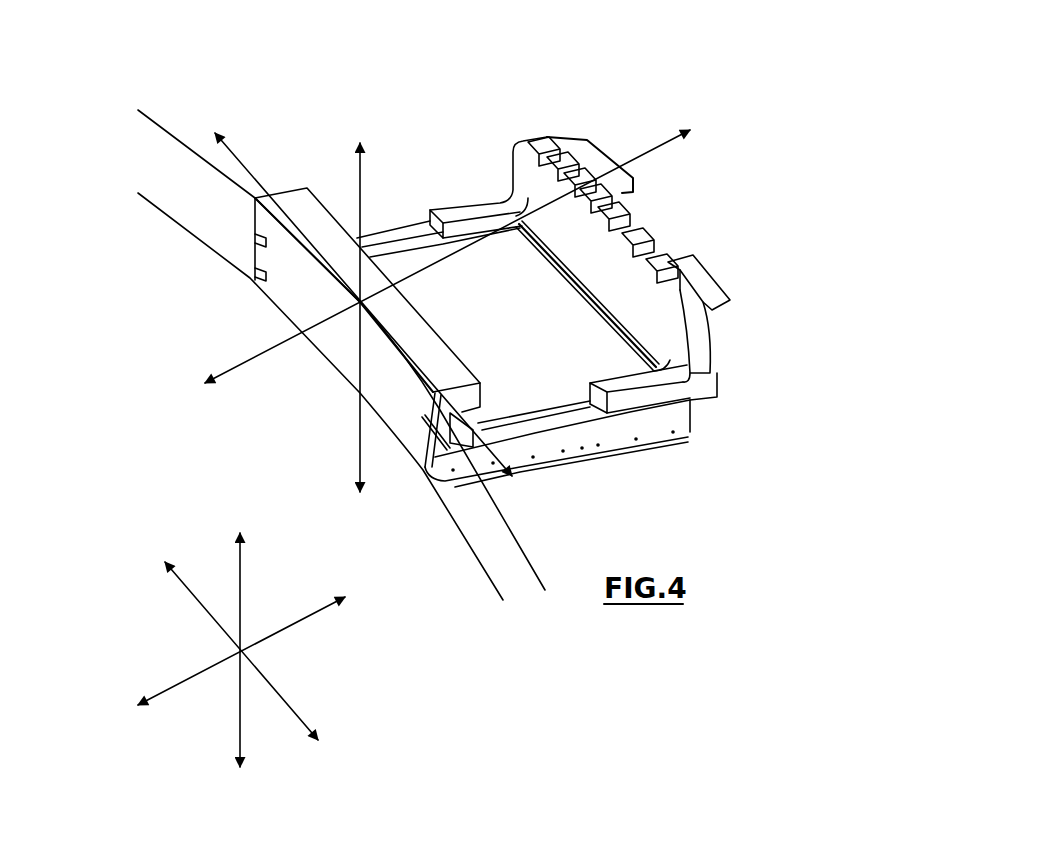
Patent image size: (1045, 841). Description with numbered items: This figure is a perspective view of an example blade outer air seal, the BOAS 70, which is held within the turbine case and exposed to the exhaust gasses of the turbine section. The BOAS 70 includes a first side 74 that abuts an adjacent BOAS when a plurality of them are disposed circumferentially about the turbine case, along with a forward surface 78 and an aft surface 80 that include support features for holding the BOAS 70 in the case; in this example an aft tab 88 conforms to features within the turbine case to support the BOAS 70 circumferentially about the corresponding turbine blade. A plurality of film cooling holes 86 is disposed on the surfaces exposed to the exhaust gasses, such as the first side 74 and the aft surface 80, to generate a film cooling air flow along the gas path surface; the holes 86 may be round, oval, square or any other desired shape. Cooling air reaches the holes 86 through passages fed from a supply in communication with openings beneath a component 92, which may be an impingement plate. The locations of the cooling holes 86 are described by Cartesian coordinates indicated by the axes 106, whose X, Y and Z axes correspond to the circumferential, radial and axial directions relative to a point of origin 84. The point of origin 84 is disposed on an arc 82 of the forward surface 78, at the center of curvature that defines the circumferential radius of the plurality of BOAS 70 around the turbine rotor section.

The blade outer air seal (BOAS) 70 is at (657, 78).
The first side 74 is at (677, 420).
The forward surface 78 is at (347, 345).
The aft surface 80 is at (492, 540).
The arc 82 is at (173, 135).
The point of origin 84 is at (357, 300).
The film cooling holes 86 is at (450, 492).
The aft tab 88 is at (620, 190).
The component (impingement plate) 92 is at (488, 266).
The axes 106 is at (358, 418).